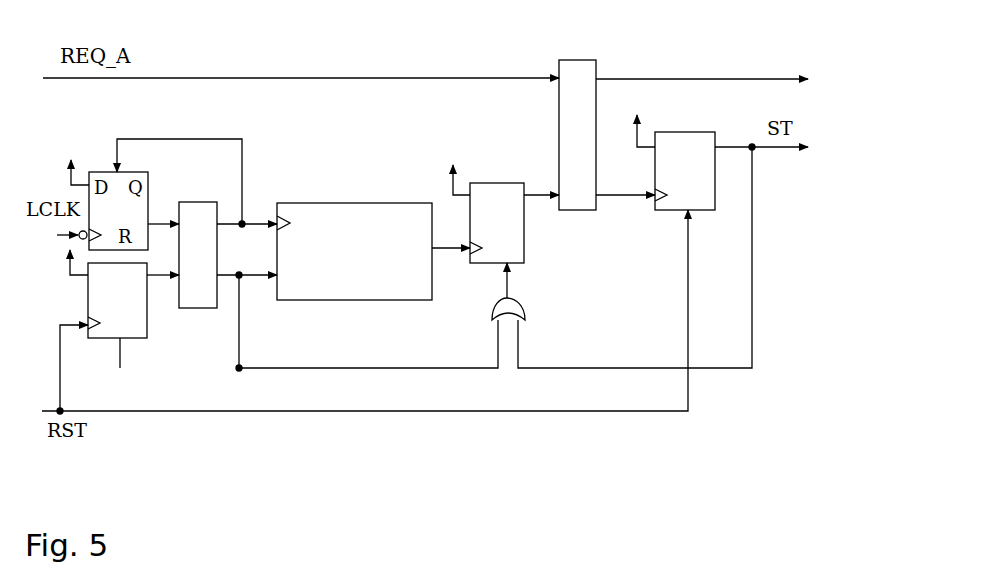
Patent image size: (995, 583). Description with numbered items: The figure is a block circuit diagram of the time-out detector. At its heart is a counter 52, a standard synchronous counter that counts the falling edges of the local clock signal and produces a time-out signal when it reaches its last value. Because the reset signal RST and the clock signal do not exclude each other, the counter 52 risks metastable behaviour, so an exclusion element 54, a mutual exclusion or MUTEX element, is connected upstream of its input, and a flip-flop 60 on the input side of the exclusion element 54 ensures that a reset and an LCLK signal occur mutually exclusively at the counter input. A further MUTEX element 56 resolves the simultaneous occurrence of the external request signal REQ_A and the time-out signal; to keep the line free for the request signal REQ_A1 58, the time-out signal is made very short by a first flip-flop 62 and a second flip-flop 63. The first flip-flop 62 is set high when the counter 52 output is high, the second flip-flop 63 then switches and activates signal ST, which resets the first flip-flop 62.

The counter 52 is at (347, 203).
The exclusion element 54 is at (200, 203).
The MUTEX element 56 is at (575, 60).
The request signal REQ_A1 58 is at (655, 79).
The flip-flop 60 is at (147, 325).
The first flip-flop 62 is at (524, 248).
The second flip-flop 63 is at (688, 132).